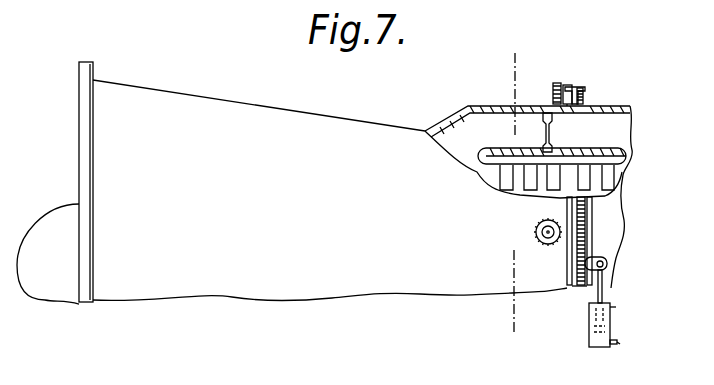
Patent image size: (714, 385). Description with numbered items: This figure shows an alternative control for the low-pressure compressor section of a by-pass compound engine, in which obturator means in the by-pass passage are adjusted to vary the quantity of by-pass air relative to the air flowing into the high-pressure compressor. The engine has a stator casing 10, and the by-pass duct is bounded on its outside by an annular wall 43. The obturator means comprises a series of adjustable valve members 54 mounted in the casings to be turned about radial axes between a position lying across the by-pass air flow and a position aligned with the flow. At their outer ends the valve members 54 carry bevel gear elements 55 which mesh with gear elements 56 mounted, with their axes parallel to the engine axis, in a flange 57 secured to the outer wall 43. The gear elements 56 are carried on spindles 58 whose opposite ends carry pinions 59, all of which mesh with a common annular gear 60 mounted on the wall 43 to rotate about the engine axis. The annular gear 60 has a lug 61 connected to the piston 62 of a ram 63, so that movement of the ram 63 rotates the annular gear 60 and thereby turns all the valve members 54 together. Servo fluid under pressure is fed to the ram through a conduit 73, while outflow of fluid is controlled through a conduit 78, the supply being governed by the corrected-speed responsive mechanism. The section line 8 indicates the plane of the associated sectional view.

The section line 8- 8 is at (535, 73).
The stator casing 10 is at (286, 108).
The annular wall 43 is at (493, 107).
The adjustable valve members 54 is at (555, 130).
The bevel gear elements 55 is at (549, 84).
The gear elements 56 is at (565, 98).
The flange 57 is at (571, 100).
The spindles 58 is at (580, 90).
The pinions 59 is at (584, 95).
The annular gear 60 is at (589, 105).
The lug 61 is at (608, 268).
The piston 62 is at (589, 330).
The ram 63 is at (588, 341).
The conduit 73 is at (616, 307).
The conduit 78 is at (617, 343).